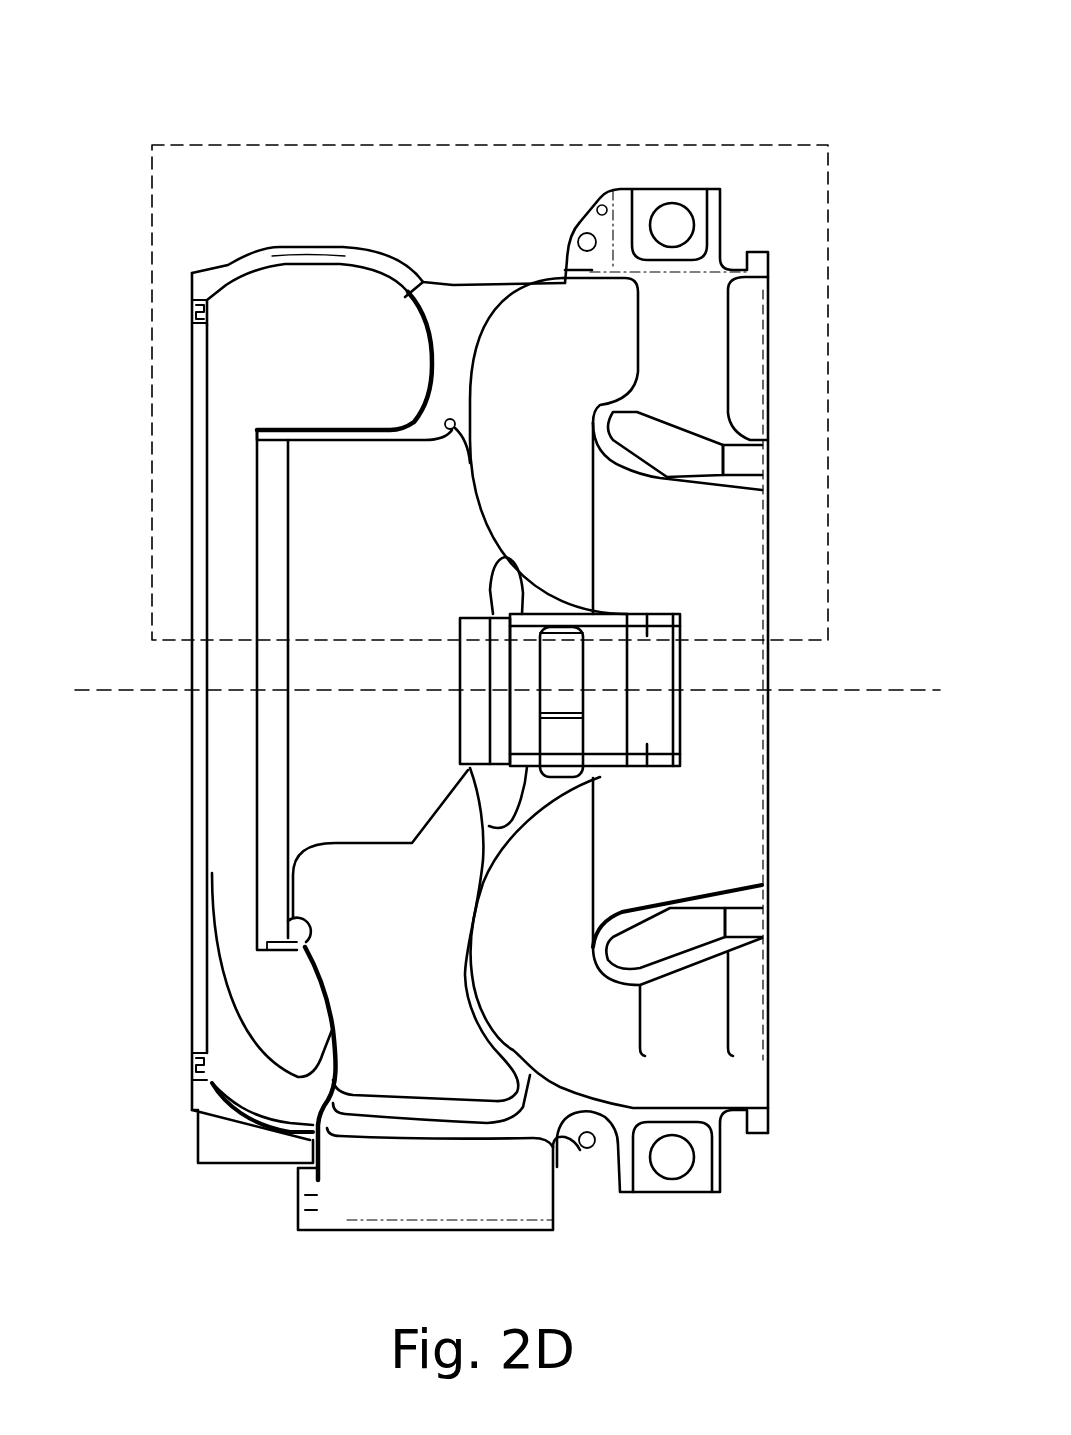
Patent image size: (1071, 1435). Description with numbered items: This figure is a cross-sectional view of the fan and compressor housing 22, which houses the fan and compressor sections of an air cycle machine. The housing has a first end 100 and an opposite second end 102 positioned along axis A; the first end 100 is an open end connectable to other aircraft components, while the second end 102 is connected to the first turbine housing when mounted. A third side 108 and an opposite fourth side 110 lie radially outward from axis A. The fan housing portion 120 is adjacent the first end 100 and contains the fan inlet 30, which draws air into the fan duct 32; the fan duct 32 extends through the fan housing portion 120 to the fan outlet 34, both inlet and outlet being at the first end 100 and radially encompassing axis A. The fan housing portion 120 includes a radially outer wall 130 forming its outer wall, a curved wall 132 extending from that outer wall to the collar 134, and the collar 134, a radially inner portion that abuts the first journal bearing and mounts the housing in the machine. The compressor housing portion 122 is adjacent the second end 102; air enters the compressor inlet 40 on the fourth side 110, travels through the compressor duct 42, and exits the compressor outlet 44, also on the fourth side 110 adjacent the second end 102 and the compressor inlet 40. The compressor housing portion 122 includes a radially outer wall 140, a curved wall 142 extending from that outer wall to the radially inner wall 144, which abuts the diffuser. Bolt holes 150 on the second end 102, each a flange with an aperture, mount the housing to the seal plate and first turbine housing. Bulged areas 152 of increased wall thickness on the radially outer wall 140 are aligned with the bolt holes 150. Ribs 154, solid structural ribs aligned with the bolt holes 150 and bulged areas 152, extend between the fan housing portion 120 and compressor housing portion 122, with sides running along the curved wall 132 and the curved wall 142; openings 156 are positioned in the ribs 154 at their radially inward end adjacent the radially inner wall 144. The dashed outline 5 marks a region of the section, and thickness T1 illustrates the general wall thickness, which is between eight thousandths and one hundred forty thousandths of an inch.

The fan and compressor housing 22 is at (122, 97).
The compressor housing portion 122 is at (305, 180).
The fan housing portion 120 is at (640, 145).
The detail region 5 is at (830, 217).
The bulged areas 152 is at (313, 252).
The ribs 154 is at (455, 310).
The third side 108 is at (495, 283).
The bolt holes 150 is at (200, 308).
The radially outer wall 140 is at (300, 262).
The curved wall 142 is at (417, 333).
The radially inner wall 144 is at (333, 440).
The compressor duct 42 is at (319, 343).
The fan duct 32 is at (554, 446).
The openings 156 is at (455, 437).
The collar 134 is at (600, 614).
The radially outer wall 130 is at (677, 268).
The fan inlet 30 is at (750, 353).
The curved wall 132 is at (520, 323).
The fan outlet 34 is at (738, 538).
The axis A is at (818, 697).
The second end 102 is at (192, 948).
The first end 100 is at (770, 985).
The compressor outlet 44 is at (228, 1140).
The compressor inlet 40 is at (340, 1203).
The fourth side 110 is at (553, 1142).
The thickness T1 is at (385, 380).